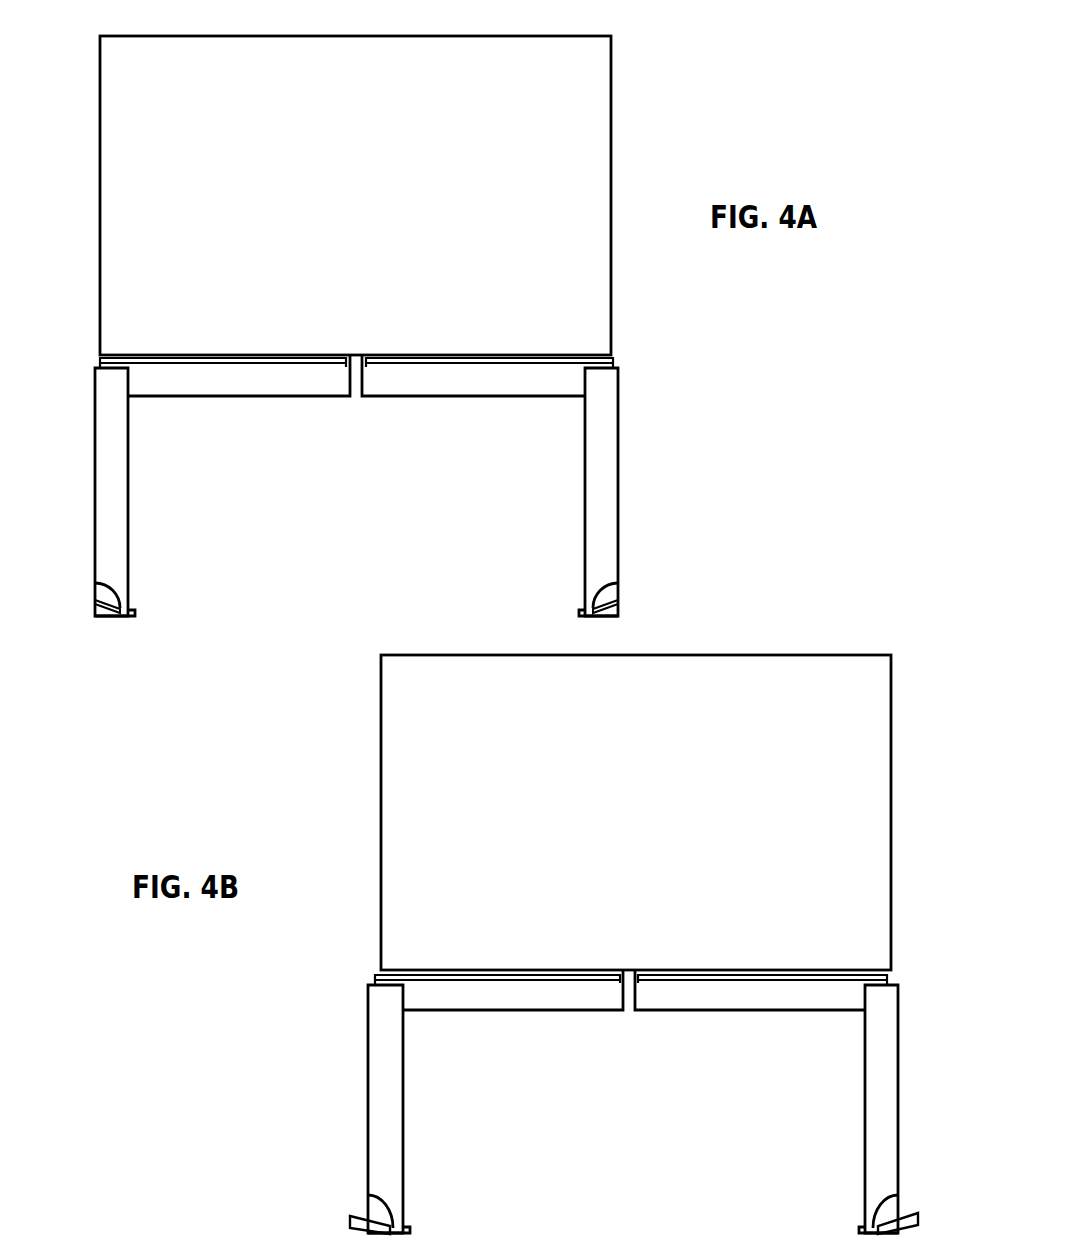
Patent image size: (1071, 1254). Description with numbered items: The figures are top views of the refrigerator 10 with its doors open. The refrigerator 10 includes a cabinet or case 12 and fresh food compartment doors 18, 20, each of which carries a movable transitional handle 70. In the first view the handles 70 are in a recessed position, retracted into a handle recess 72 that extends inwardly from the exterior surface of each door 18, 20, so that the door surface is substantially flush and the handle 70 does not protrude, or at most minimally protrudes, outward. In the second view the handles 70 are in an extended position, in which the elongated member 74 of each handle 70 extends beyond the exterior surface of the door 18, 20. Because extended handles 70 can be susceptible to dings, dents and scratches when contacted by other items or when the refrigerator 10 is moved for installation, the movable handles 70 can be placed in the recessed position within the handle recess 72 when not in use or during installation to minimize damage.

In FIG. 4A, the refrigerator 10 is at (84, 78).
In FIG. 4B, the refrigerator 10 is at (370, 686).
In FIG. 4A, the cabinet 12 is at (580, 108).
In FIG. 4B, the cabinet 12 is at (860, 672).
In FIG. 4A, the fresh food compartment door 18 is at (105, 430).
In FIG. 4B, the fresh food compartment door 18 is at (388, 1018).
In FIG. 4A, the fresh food compartment door 20 is at (602, 413).
In FIG. 4B, the fresh food compartment door 20 is at (877, 1010).
In FIG. 4A, the handle 70 is at (108, 617).
In FIG. 4B, the handle 70 is at (392, 1228).
In FIG. 4A, the handle recess 72 is at (108, 594).
In FIG. 4B, the handle recess 72 is at (372, 1200).
In FIG. 4A, the elongated member 74 is at (96, 618).
In FIG. 4B, the elongated member 74 is at (358, 1212).